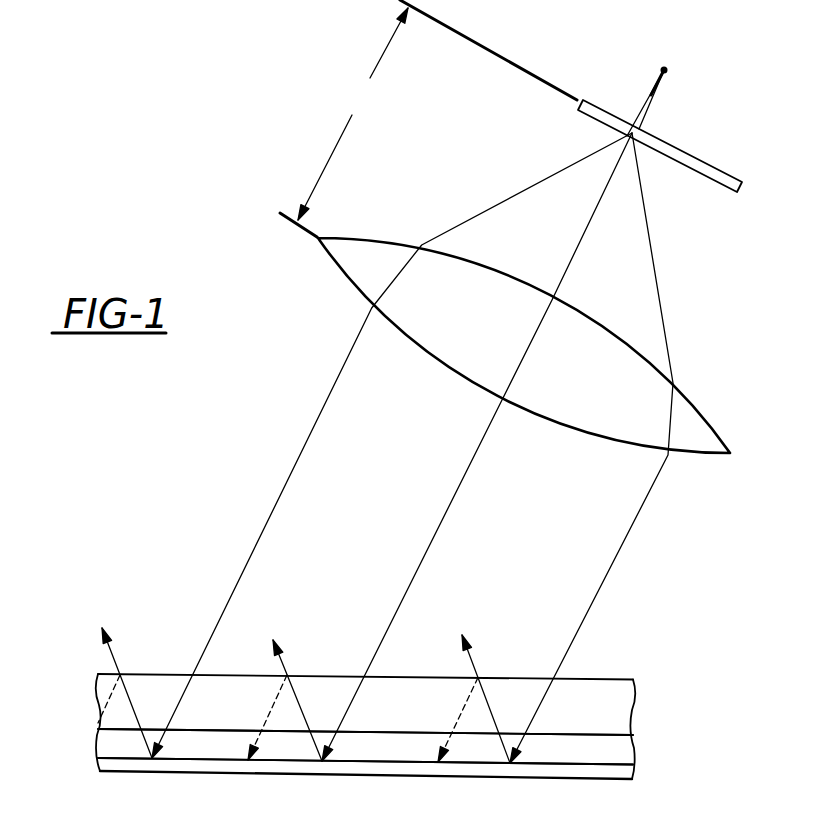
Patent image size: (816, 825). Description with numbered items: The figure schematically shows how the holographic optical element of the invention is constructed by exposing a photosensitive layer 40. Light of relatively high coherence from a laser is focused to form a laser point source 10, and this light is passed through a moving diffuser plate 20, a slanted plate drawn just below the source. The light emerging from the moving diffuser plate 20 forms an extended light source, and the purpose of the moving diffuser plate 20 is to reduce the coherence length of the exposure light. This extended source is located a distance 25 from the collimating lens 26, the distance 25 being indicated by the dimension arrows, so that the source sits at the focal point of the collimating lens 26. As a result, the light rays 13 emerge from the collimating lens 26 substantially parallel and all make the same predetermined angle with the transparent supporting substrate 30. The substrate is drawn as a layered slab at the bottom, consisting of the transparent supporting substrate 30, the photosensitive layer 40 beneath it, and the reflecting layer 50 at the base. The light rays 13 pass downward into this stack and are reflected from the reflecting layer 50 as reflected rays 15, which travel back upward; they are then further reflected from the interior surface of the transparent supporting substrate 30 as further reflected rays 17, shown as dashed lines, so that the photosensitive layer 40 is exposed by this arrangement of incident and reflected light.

The laser point source 10 is at (667, 70).
The moving diffuser plate 20 is at (722, 170).
The distance 25 is at (344, 122).
The collimating lens 26 is at (718, 427).
The light rays 13 is at (330, 395).
The reflected rays 15 is at (117, 668).
The further reflected rays 17 is at (105, 689).
The transparent supporting substrate 30 is at (633, 710).
The photosensitive layer 40 is at (633, 752).
The reflecting layer 50 is at (633, 773).